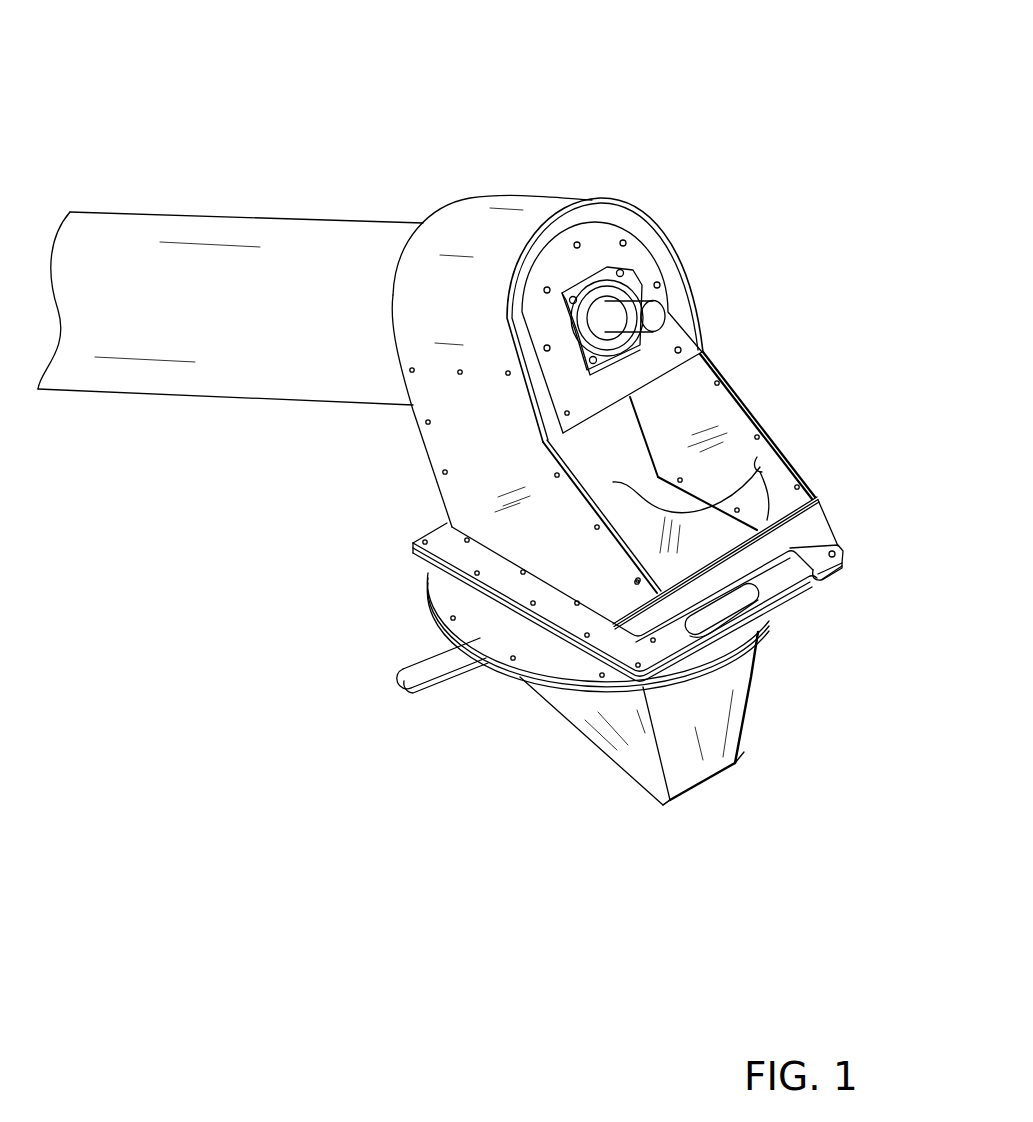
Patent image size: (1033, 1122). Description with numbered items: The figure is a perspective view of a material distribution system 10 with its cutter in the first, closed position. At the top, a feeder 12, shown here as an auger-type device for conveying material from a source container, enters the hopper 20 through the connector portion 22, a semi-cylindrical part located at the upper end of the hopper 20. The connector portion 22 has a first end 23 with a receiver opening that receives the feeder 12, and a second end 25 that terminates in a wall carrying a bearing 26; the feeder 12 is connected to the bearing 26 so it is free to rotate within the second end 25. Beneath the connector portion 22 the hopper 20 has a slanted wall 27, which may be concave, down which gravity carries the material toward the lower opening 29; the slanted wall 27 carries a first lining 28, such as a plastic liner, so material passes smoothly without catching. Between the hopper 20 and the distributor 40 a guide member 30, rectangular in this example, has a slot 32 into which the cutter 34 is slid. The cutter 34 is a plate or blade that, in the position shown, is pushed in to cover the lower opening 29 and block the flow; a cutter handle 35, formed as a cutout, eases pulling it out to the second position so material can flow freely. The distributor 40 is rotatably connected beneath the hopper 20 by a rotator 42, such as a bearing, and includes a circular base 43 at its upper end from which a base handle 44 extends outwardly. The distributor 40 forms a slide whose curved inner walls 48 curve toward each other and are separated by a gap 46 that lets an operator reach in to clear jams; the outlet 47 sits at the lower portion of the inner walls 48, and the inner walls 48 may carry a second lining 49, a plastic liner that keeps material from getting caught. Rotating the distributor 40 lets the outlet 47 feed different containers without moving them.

The feeding device 10 is at (680, 112).
The feeder 12 is at (224, 211).
The hopper 20 is at (414, 453).
The connector portion 22 is at (637, 257).
The first end 23 is at (435, 203).
The second end 25 is at (650, 363).
The bearing 26 is at (638, 275).
The slanted wall 27 is at (643, 427).
The first lining 28 is at (757, 457).
The lower opening 29 is at (690, 785).
The guide member 30 is at (395, 555).
The slot 32 is at (818, 572).
The cutter 34 is at (808, 560).
The cutter handle 35 is at (776, 622).
The distributor 40 is at (574, 745).
The rotator 42 is at (513, 623).
The base 43 is at (427, 608).
The base handle 44 is at (402, 687).
The gap 46 is at (677, 707).
The outlet 47 is at (705, 780).
The inner walls 48 is at (727, 672).
The second lining 49 is at (745, 752).